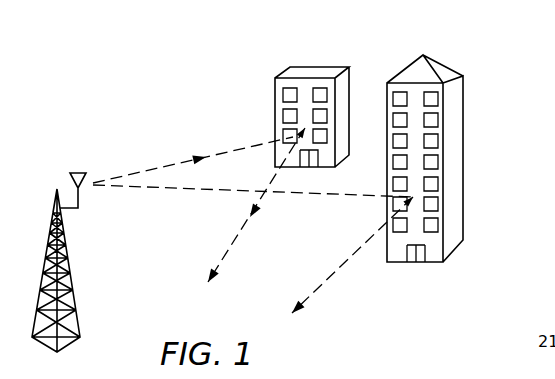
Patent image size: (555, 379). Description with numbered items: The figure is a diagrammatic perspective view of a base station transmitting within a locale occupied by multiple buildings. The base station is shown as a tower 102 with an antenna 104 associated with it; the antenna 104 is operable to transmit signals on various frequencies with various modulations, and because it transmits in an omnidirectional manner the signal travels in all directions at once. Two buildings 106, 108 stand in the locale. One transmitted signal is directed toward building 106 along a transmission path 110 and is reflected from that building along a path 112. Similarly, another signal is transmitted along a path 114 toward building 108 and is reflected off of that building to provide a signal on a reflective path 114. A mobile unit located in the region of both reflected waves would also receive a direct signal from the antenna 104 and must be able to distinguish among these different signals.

The tower 102 is at (72, 273).
The antenna 104 is at (72, 171).
The building 106 is at (313, 73).
The building 108 is at (457, 158).
The transmission path 110 is at (228, 148).
The reflected path 112 is at (232, 246).
The transmission and reflective path 114 is at (333, 197).